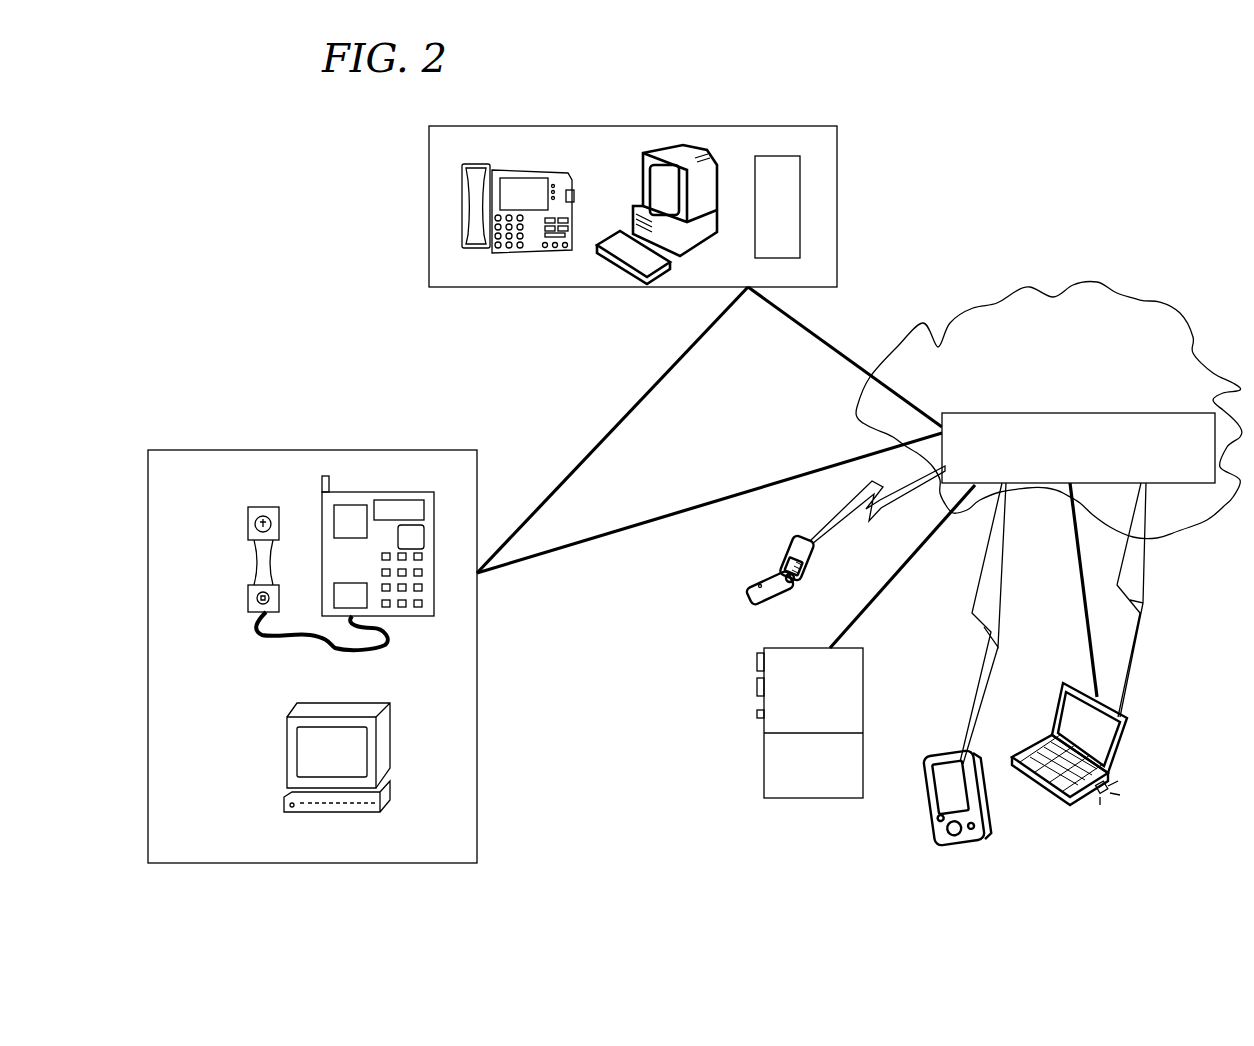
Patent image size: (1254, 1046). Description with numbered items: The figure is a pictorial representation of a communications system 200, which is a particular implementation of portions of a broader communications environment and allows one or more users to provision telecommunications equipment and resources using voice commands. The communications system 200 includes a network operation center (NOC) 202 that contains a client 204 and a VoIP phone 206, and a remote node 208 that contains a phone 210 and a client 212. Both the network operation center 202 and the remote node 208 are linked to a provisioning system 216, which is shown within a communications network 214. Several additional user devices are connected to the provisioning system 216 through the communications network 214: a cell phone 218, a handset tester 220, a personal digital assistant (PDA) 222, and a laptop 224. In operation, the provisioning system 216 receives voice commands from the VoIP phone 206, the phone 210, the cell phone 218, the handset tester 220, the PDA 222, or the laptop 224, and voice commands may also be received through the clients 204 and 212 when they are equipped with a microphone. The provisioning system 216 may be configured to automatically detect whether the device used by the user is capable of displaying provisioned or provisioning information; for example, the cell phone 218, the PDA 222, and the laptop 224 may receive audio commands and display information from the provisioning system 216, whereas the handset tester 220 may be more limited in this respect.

The communications system 200 is at (271, 179).
The network operation center (NOC) 202 is at (821, 140).
The client 204 is at (655, 150).
The VoIP phone 206 is at (464, 228).
The remote node 208 is at (232, 482).
The phone 210 is at (275, 636).
The client 212 is at (280, 795).
The communications network 214 is at (1067, 384).
The provisioning system 216 is at (1099, 477).
The cell phone 218 is at (755, 580).
The handset tester 220 is at (834, 728).
The personal digital assistant (PDA) 222 is at (942, 835).
The laptop 224 is at (1072, 795).